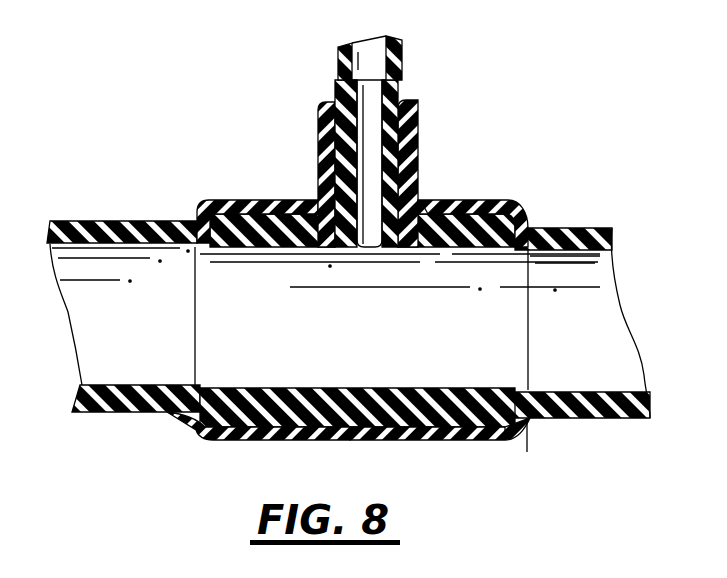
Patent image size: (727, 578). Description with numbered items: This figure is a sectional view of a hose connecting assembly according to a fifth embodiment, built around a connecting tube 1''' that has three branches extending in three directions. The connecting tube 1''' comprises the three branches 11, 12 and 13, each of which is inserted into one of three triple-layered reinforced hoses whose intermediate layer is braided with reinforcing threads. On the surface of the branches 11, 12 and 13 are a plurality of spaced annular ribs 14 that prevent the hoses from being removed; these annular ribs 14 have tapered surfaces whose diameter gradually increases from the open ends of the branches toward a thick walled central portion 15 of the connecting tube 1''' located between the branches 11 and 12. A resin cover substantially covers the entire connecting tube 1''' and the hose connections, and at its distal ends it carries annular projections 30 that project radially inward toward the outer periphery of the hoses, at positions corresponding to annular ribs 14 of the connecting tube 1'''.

The branch 11 is at (188, 176).
The branch 12 is at (606, 268).
The branch 13 is at (378, 100).
The annular rib 14 is at (545, 262).
The thick walled central portion 15 is at (318, 204).
The annular projection 30 is at (320, 120).
The connecting tube 1''' is at (491, 305).